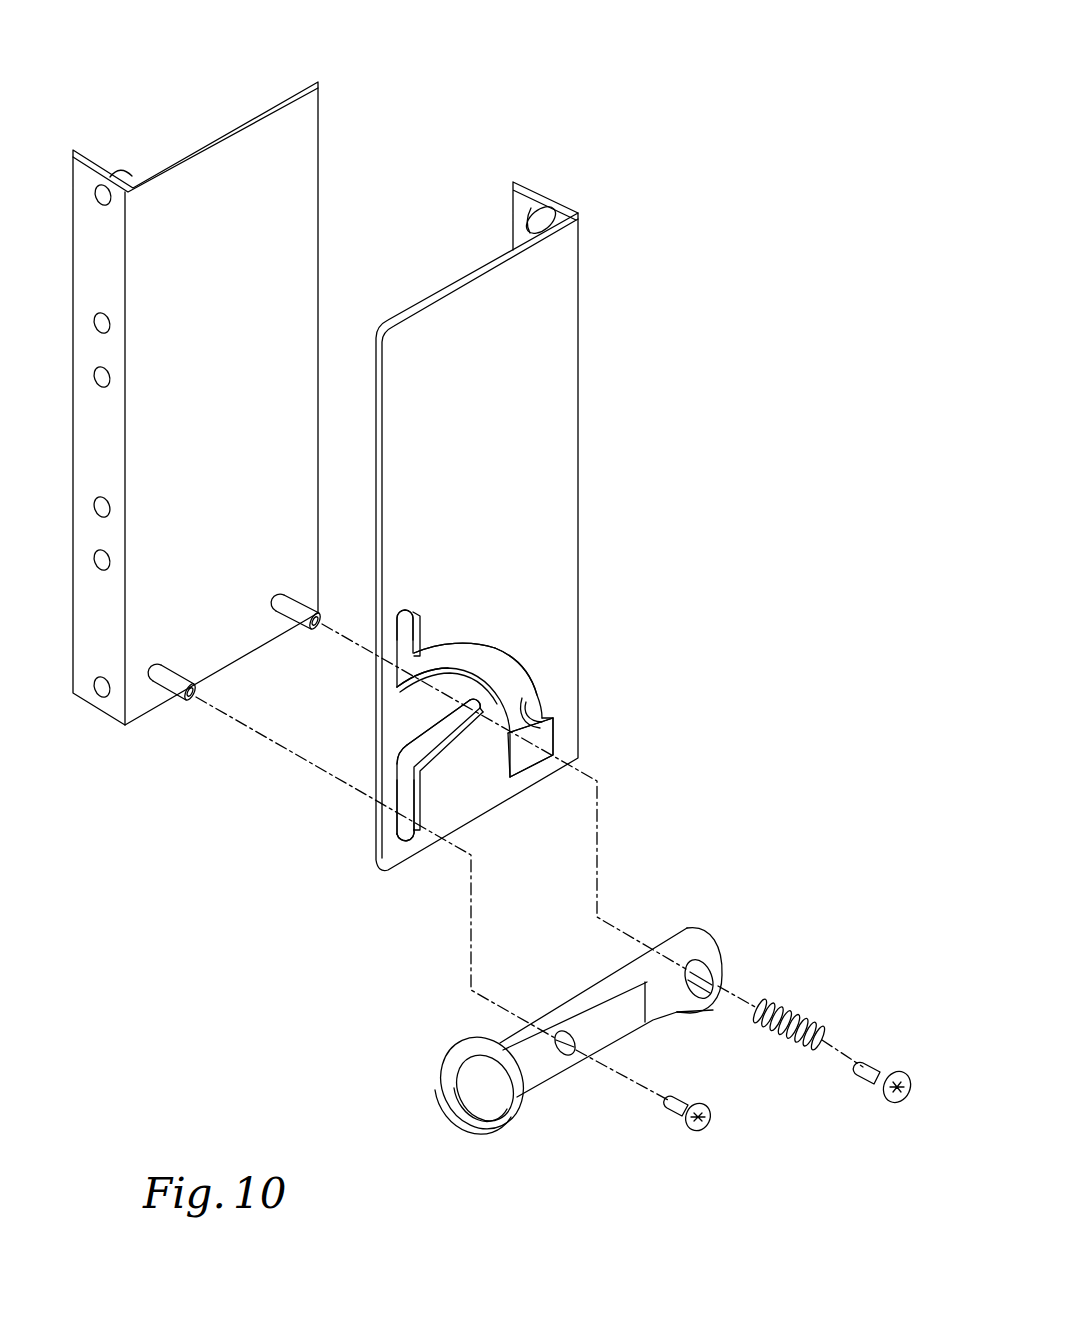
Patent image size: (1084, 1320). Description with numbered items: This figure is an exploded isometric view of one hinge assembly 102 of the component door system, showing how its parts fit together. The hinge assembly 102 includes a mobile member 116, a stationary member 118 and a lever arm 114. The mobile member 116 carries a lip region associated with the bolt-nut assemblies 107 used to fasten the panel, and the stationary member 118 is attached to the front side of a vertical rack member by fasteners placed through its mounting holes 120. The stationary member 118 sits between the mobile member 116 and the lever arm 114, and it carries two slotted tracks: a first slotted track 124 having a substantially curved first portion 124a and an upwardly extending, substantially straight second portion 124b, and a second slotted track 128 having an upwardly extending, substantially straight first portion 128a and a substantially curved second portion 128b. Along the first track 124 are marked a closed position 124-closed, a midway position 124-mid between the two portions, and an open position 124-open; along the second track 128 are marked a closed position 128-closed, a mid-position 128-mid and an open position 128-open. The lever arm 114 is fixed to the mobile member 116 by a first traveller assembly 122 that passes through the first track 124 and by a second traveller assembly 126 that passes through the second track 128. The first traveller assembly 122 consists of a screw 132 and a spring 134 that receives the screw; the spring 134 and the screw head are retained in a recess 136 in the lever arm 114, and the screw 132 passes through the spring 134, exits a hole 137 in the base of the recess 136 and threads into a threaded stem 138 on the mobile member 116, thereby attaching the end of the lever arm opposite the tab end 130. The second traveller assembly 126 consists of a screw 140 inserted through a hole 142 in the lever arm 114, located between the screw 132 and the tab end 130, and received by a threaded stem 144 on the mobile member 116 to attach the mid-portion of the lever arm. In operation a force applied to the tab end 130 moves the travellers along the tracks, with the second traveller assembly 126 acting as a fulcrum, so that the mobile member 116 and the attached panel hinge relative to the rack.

The hinge assembly 102 is at (753, 55).
The bolt-nut assembly 107 is at (126, 170).
The lever arm 114 is at (600, 988).
The mobile member 116 is at (303, 127).
The stationary member 118 is at (553, 287).
The mounting hole 120 is at (538, 222).
The first traveller assembly 122 is at (848, 997).
The first slotted track 124 is at (488, 647).
The first portion of the first track 124a is at (517, 663).
The second portion of the first track 124b is at (420, 647).
The open position of the first track 124-open is at (417, 620).
The midway position of the first track 124-mid is at (410, 686).
The closed position of the first track 124-closed is at (557, 737).
The second traveller assembly 126 is at (720, 1147).
The second slotted track 128 is at (410, 750).
The first portion of the second track 128a is at (393, 803).
The second portion of the second track 128b is at (430, 740).
The open position of the second track 128-open is at (474, 700).
The mid-position of the second track 128-mid is at (403, 768).
The closed position of the second track 128-closed is at (413, 840).
The tab end 130 is at (447, 1098).
The screw 132 is at (873, 1090).
The spring 134 is at (790, 1007).
The recess 136 is at (710, 972).
The hole 137 is at (713, 1010).
The threaded stem 138 is at (286, 602).
The screw 140 is at (668, 1114).
The hole 142 is at (563, 1057).
The threaded stem 144 is at (165, 672).